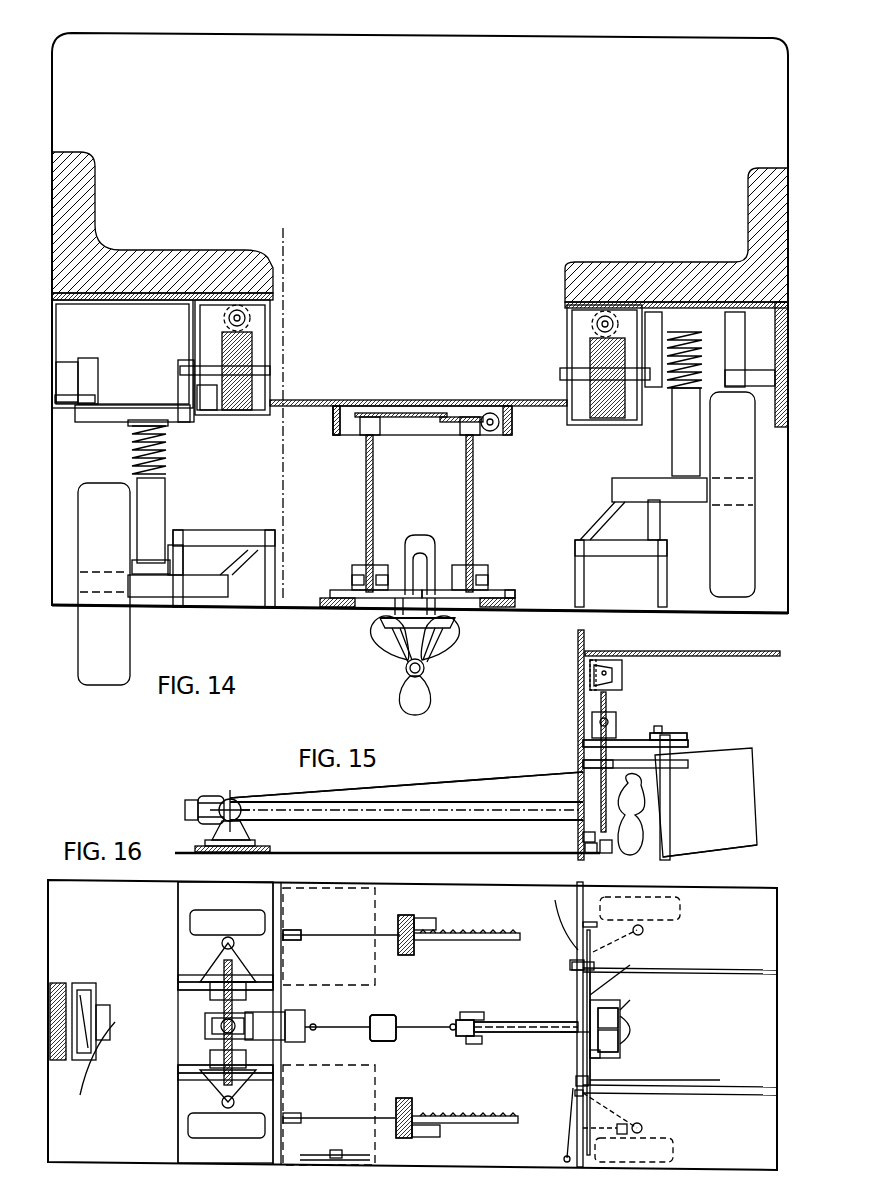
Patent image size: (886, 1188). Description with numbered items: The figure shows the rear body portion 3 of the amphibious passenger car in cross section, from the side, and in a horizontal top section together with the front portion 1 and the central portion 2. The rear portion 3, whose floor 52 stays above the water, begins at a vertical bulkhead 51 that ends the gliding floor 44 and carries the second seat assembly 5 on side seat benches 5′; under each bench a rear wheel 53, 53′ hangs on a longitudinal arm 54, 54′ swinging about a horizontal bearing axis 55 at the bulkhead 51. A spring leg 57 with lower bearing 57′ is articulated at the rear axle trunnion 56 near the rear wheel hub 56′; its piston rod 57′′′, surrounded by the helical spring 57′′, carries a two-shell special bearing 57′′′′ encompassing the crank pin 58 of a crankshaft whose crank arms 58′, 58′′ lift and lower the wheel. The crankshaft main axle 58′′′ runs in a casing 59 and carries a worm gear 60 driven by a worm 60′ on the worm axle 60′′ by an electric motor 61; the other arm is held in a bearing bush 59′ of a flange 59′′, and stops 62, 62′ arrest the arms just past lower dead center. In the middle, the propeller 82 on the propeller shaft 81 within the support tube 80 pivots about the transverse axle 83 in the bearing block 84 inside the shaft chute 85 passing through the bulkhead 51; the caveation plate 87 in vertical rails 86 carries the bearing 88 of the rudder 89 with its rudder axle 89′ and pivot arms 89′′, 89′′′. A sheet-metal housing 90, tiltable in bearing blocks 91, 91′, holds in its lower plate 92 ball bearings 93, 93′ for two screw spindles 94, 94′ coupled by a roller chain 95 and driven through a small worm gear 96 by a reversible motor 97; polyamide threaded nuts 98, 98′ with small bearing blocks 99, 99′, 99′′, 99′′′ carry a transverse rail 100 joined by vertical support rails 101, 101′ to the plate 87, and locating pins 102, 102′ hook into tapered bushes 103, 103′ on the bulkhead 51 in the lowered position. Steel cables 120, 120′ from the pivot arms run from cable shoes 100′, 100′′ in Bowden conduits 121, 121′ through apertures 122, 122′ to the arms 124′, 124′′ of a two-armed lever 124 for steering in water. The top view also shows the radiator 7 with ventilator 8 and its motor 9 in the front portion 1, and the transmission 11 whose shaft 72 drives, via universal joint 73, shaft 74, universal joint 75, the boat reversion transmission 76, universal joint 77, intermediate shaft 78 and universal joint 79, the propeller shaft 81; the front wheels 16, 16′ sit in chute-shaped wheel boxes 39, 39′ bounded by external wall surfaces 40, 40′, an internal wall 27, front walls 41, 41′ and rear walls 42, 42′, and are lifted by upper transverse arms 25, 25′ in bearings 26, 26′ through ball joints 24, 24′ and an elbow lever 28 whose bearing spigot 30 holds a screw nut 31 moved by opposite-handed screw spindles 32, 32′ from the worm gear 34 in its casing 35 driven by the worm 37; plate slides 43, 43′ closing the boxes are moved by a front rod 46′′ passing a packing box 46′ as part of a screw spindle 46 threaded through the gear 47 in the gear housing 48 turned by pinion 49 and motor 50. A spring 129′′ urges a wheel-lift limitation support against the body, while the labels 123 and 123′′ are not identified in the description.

In FIG. 16, the front portion 1 is at (66, 900).
In FIG. 15, the central portion 2 is at (433, 762).
In FIG. 14, the rear portion 3 is at (447, 180).
In FIG. 15, the rear portion 3 is at (728, 634).
In FIG. 16, the rear portion 3 is at (746, 985).
In FIG. 14, the second seat assembly 5 is at (90, 200).
In FIG. 16, the second seat assembly 5 is at (689, 1029).
In FIG. 14, the side seat bench 5′ is at (735, 300).
In FIG. 16, the engine water radiator 7 is at (60, 983).
In FIG. 16, the electric ventilator 8 is at (85, 990).
In FIG. 16, the electric motor 9 is at (89, 1069).
In FIG. 16, the speed-change transmission 11 is at (303, 1014).
In FIG. 16, the front wheel 16 is at (200, 1125).
In FIG. 16, the front wheel 16′ is at (200, 918).
In FIG. 16, the ball and socket joint 24 is at (222, 1104).
In FIG. 16, the ball and socket joint 24′ is at (222, 940).
In FIG. 16, the upper transverse arm 25 is at (212, 1085).
In FIG. 16, the upper transverse arm 25′ is at (210, 960).
In FIG. 16, the bearing 26 is at (195, 985).
In FIG. 16, the bearing 26′ is at (195, 1069).
In FIG. 15, the internal wall 27 is at (170, 882).
In FIG. 16, the elbow lever 28 is at (212, 996).
In FIG. 16, the bearing spigot 30 is at (265, 1026).
In FIG. 16, the screw nut 31 is at (245, 997).
In FIG. 16, the screw spindle 32 is at (178, 980).
In FIG. 16, the screw spindle 32′ is at (205, 1042).
In FIG. 16, the worm gear 34 is at (205, 1024).
In FIG. 16, the casing 35 is at (210, 1032).
In FIG. 16, the drive worm 37 is at (212, 1028).
In FIG. 16, the front wheel box 39 is at (225, 1115).
In FIG. 16, the front wheel box 39′ is at (225, 936).
In FIG. 16, the part surface of external wall 40 is at (234, 1164).
In FIG. 16, the part surface of external wall 40′ is at (235, 884).
In FIG. 16, the front wall 41 is at (178, 1077).
In FIG. 16, the front wall 41′ is at (178, 952).
In FIG. 16, the rear wall 42 is at (283, 1079).
In FIG. 16, the rear wall 42′ is at (283, 899).
In FIG. 16, the plate slide 43 is at (375, 1080).
In FIG. 16, the plate slide 43′ is at (370, 975).
In FIG. 14, the gliding floor 44 is at (230, 585).
In FIG. 15, the gliding floor 44 is at (692, 620).
In FIG. 16, the screw spindle 46 is at (480, 933).
In FIG. 16, the packing box 46′ is at (290, 940).
In FIG. 16, the front rod 46′′ is at (348, 935).
In FIG. 16, the gear 47 is at (414, 938).
In FIG. 16, the gear housing 48 is at (412, 1135).
In FIG. 16, the pinion 49 is at (404, 915).
In FIG. 16, the reversible electric motor 50 is at (425, 918).
In FIG. 14, the vertical bulkhead 51 is at (385, 507).
In FIG. 15, the vertical bulkhead 51 is at (578, 700).
In FIG. 14, the floor 52 is at (428, 400).
In FIG. 15, the floor 52 is at (740, 656).
In FIG. 14, the rear wheel 53 is at (732, 494).
In FIG. 16, the rear wheel 53 is at (673, 1150).
In FIG. 14, the rear wheel 53′ is at (104, 584).
In FIG. 16, the rear wheel 53′ is at (680, 910).
In FIG. 14, the longitudinal arm 54 is at (600, 530).
In FIG. 16, the longitudinal arm 54 is at (645, 1124).
In FIG. 14, the longitudinal arm 54′ is at (248, 555).
In FIG. 15, the longitudinal arm 54′ is at (612, 848).
In FIG. 14, the horizontal bearing axis 55 is at (255, 540).
In FIG. 16, the horizontal bearing axis 55 is at (618, 942).
In FIG. 14, the rear axle trunnion 56 is at (200, 590).
In FIG. 14, the rear wheel hub 56′ is at (100, 570).
In FIG. 14, the spring leg 57 is at (160, 502).
In FIG. 14, the lower bearing 57′ is at (150, 580).
In FIG. 14, the spring leg helical spring 57′′ is at (132, 478).
In FIG. 14, the spring leg piston rod 57′′′ is at (170, 450).
In FIG. 14, the special bearing 57′′′′ is at (130, 430).
In FIG. 14, the crank pin 58 is at (170, 400).
In FIG. 14, the crank arm 58′ is at (185, 362).
In FIG. 14, the crank arm 58′′ is at (90, 375).
In FIG. 14, the crankshaft main axle 58′′′ is at (100, 352).
In FIG. 14, the casing 59 is at (603, 425).
In FIG. 14, the bearing bush 59′ is at (66, 360).
In FIG. 14, the flange 59′′ is at (60, 405).
In FIG. 14, the worm gear 60 is at (232, 400).
In FIG. 14, the worm 60′ is at (250, 312).
In FIG. 14, the worm axle 60′′ is at (255, 318).
In FIG. 14, the electric motor 61 is at (268, 333).
In FIG. 14, the stop 62 is at (85, 408).
In FIG. 14, the stop 62′ is at (190, 418).
In FIG. 16, the shaft 72 is at (305, 1014).
In FIG. 16, the universal joint 73 is at (314, 1032).
In FIG. 16, the shaft 74 is at (383, 1015).
In FIG. 16, the universal joint 75 is at (370, 1037).
In FIG. 16, the boat reversion transmission 76 is at (420, 1027).
In FIG. 16, the universal joint 77 is at (450, 1032).
In FIG. 15, the intermediate shaft 78 is at (185, 812).
In FIG. 16, the intermediate shaft 78 is at (465, 1020).
In FIG. 15, the universal joint 79 is at (200, 800).
In FIG. 16, the universal joint 79 is at (462, 1038).
In FIG. 14, the propeller shaft support tube 80 is at (408, 676).
In FIG. 15, the propeller shaft support tube 80 is at (380, 824).
In FIG. 16, the propeller shaft support tube 80 is at (490, 1022).
In FIG. 15, the propeller shaft 81 is at (435, 815).
In FIG. 16, the propeller shaft 81 is at (508, 1035).
In FIG. 14, the propeller 82 is at (428, 698).
In FIG. 15, the propeller 82 is at (660, 850).
In FIG. 15, the horizontal transverse axle 83 is at (225, 800).
In FIG. 16, the horizontal transverse axle 83 is at (475, 1044).
In FIG. 16, the bearing block 84 is at (472, 1012).
In FIG. 14, the shaft chute 85 is at (415, 535).
In FIG. 15, the shaft chute 85 is at (320, 795).
In FIG. 16, the shaft chute 85 is at (530, 1022).
In FIG. 14, the vertical rails 86 is at (428, 645).
In FIG. 15, the vertical rails 86 is at (535, 815).
In FIG. 14, the caveation plate 87 is at (378, 640).
In FIG. 15, the caveation plate 87 is at (575, 773).
In FIG. 16, the caveation plate 87 is at (650, 990).
In FIG. 15, the bearing 88 is at (687, 738).
In FIG. 15, the rudder 89 is at (706, 802).
In FIG. 16, the rudder 89 is at (630, 1028).
In FIG. 15, the control rudder axle 89′ is at (690, 845).
In FIG. 15, the pivot arm 89′′ is at (672, 733).
In FIG. 16, the pivot arm 89′′ is at (620, 1012).
In FIG. 16, the pivot arm 89′′′ is at (630, 1040).
In FIG. 14, the sheet-metal housing 90 is at (345, 408).
In FIG. 15, the sheet-metal housing 90 is at (622, 675).
In FIG. 16, the sheet-metal housing 90 is at (572, 972).
In FIG. 14, the bearing block 91 is at (512, 420).
In FIG. 15, the bearing block 91 is at (595, 665).
In FIG. 14, the bearing block 91′ is at (333, 420).
In FIG. 14, the lower plate 92 is at (440, 440).
In FIG. 14, the ball bearing 93 is at (476, 438).
In FIG. 14, the ball bearing 93′ is at (380, 438).
In FIG. 14, the screw spindle 94 is at (474, 485).
In FIG. 15, the screw spindle 94 is at (601, 783).
In FIG. 14, the screw spindle 94′ is at (366, 485).
In FIG. 14, the roller chain 95 is at (398, 413).
In FIG. 14, the small worm gear 96 is at (485, 413).
In FIG. 14, the reversible electric motor 97 is at (505, 437).
In FIG. 14, the threaded nut 98 is at (475, 565).
In FIG. 15, the threaded nut 98 is at (616, 718).
In FIG. 14, the threaded nut 98′ is at (355, 565).
In FIG. 14, the small bearing block 99 is at (488, 578).
In FIG. 14, the small bearing block 99′ is at (445, 560).
In FIG. 14, the small bearing block 99′′ is at (352, 578).
In FIG. 14, the small bearing block 99′′′ is at (382, 575).
In FIG. 14, the transverse rail 100 is at (520, 588).
In FIG. 15, the transverse rail 100 is at (583, 762).
In FIG. 16, the cable shoe 100′ is at (640, 1045).
In FIG. 16, the cable shoe 100′′ is at (653, 987).
In FIG. 14, the vertical support rail 101 is at (448, 625).
In FIG. 15, the vertical support rail 101 is at (583, 765).
In FIG. 14, the vertical support rail 101′ is at (385, 622).
In FIG. 14, the locating pin 102 is at (515, 594).
In FIG. 15, the locating pin 102 is at (612, 748).
In FIG. 14, the locating pin 102′ is at (335, 592).
In FIG. 14, the tapered bush 103 is at (505, 615).
In FIG. 15, the tapered bush 103 is at (585, 850).
In FIG. 14, the tapered bush 103′ is at (330, 607).
In FIG. 15, the steel cable 120 is at (625, 740).
In FIG. 16, the steel cable 120 is at (580, 987).
In FIG. 16, the steel cable 120′ is at (625, 1054).
In FIG. 16, the Bowden drive conduit 121 is at (575, 987).
In FIG. 16, the Bowden drive conduit 121′ is at (600, 1056).
In FIG. 16, the aperture 122 is at (575, 962).
In FIG. 16, the aperture 122′ is at (671, 1072).
In FIG. 15, the bracket 123 is at (580, 880).
In FIG. 16, the bracket 123′′ is at (576, 1084).
In FIG. 16, the two-armed lever 124 is at (310, 1155).
In FIG. 16, the arm 124′ is at (335, 1150).
In FIG. 16, the arm 124′′ is at (348, 1155).
In FIG. 16, the spring 129′′ is at (568, 1158).